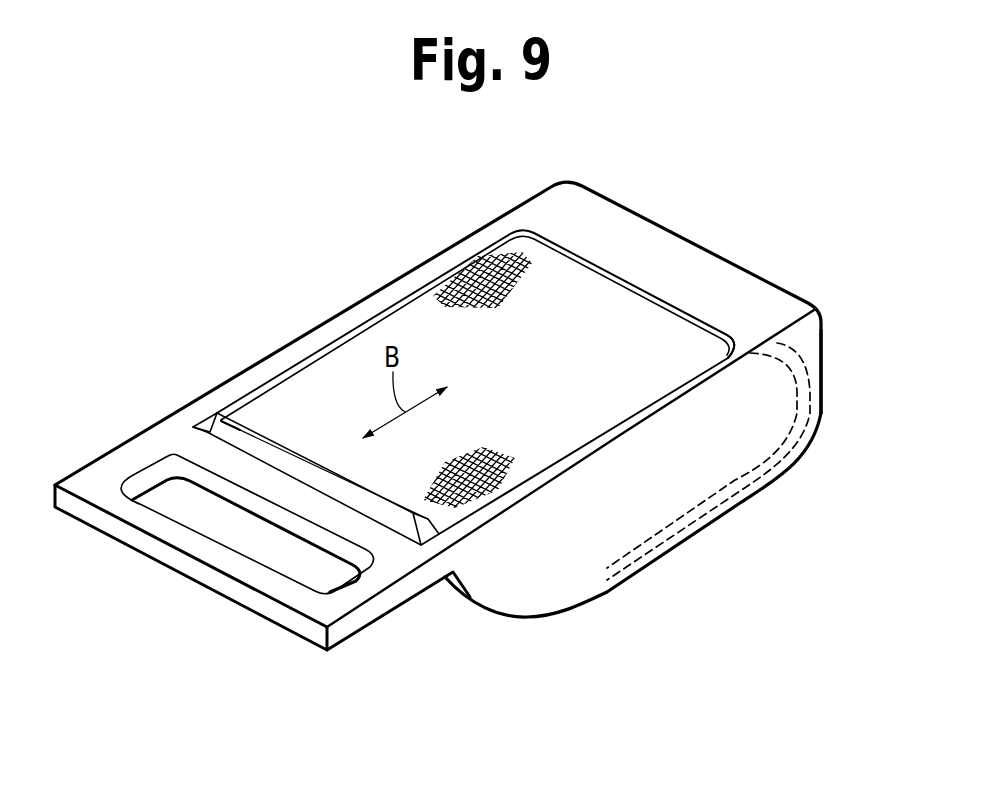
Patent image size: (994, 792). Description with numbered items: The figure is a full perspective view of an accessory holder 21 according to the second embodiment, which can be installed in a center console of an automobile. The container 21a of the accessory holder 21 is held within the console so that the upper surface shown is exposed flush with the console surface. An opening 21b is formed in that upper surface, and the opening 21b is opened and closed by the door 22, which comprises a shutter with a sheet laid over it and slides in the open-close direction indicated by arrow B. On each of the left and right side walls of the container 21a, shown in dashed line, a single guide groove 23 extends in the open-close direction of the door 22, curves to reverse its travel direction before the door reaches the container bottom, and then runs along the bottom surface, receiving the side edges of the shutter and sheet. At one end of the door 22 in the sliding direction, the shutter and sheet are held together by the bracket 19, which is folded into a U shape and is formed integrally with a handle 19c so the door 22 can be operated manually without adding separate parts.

The bracket 19 is at (204, 426).
The handle 19c is at (257, 435).
The accessory holder 21 is at (638, 140).
The container 21a is at (823, 363).
The opening 21b is at (714, 360).
The door 22 is at (417, 326).
The guide groove 23 is at (767, 477).